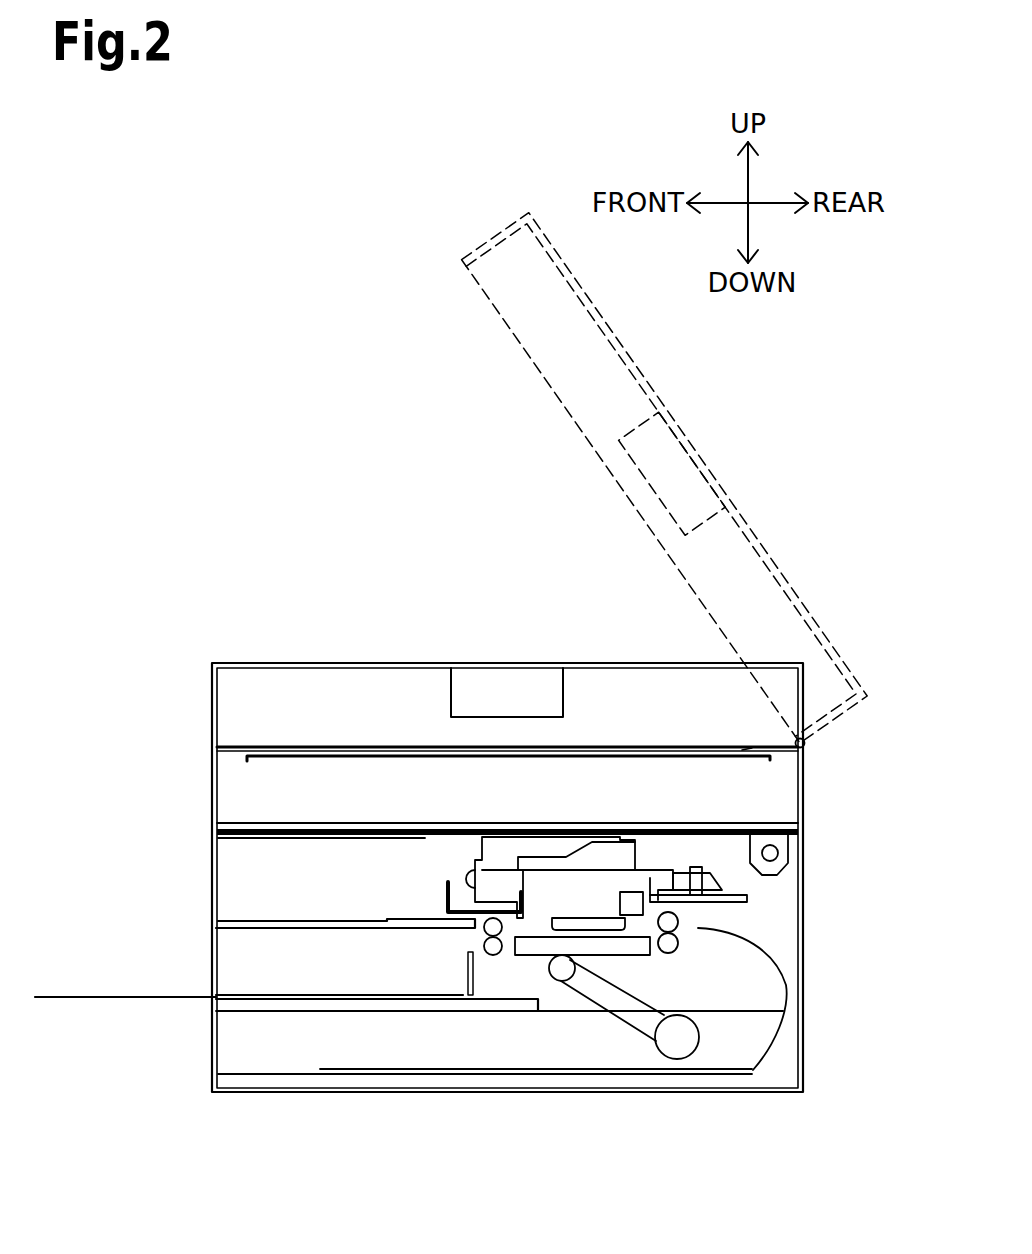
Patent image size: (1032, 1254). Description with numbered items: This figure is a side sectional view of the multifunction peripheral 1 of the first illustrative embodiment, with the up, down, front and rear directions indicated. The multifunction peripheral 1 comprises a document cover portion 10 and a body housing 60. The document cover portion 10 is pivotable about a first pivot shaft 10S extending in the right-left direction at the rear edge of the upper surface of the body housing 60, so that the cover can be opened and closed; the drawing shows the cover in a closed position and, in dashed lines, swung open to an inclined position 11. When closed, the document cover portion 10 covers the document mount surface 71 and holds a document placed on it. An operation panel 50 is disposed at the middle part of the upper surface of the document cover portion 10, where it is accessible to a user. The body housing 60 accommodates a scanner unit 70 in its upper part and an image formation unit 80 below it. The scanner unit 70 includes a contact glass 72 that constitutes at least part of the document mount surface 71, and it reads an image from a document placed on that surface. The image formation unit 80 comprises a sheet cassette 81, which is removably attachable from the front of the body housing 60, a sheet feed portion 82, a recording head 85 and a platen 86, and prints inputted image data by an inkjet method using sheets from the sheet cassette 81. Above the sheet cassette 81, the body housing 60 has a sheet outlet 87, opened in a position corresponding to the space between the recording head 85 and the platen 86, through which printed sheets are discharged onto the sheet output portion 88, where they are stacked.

The multifunction peripheral 1 is at (232, 443).
The document cover portion 10 is at (251, 663).
The first pivot shaft 10S is at (806, 748).
The cover 11 is at (579, 288).
The operation panel 50 is at (662, 485).
The body housing 60 is at (802, 850).
The scanner unit 70 is at (243, 801).
The document mount surface 71 is at (378, 748).
The contact glass 72 is at (290, 756).
The image formation unit 80 is at (775, 914).
The sheet cassette 81 is at (245, 1042).
The sheet feed portion 82 is at (641, 1023).
The recording head 85 is at (605, 888).
The platen 86 is at (633, 956).
The sheet outlet 87 is at (465, 938).
The sheet output portion 88 is at (252, 994).